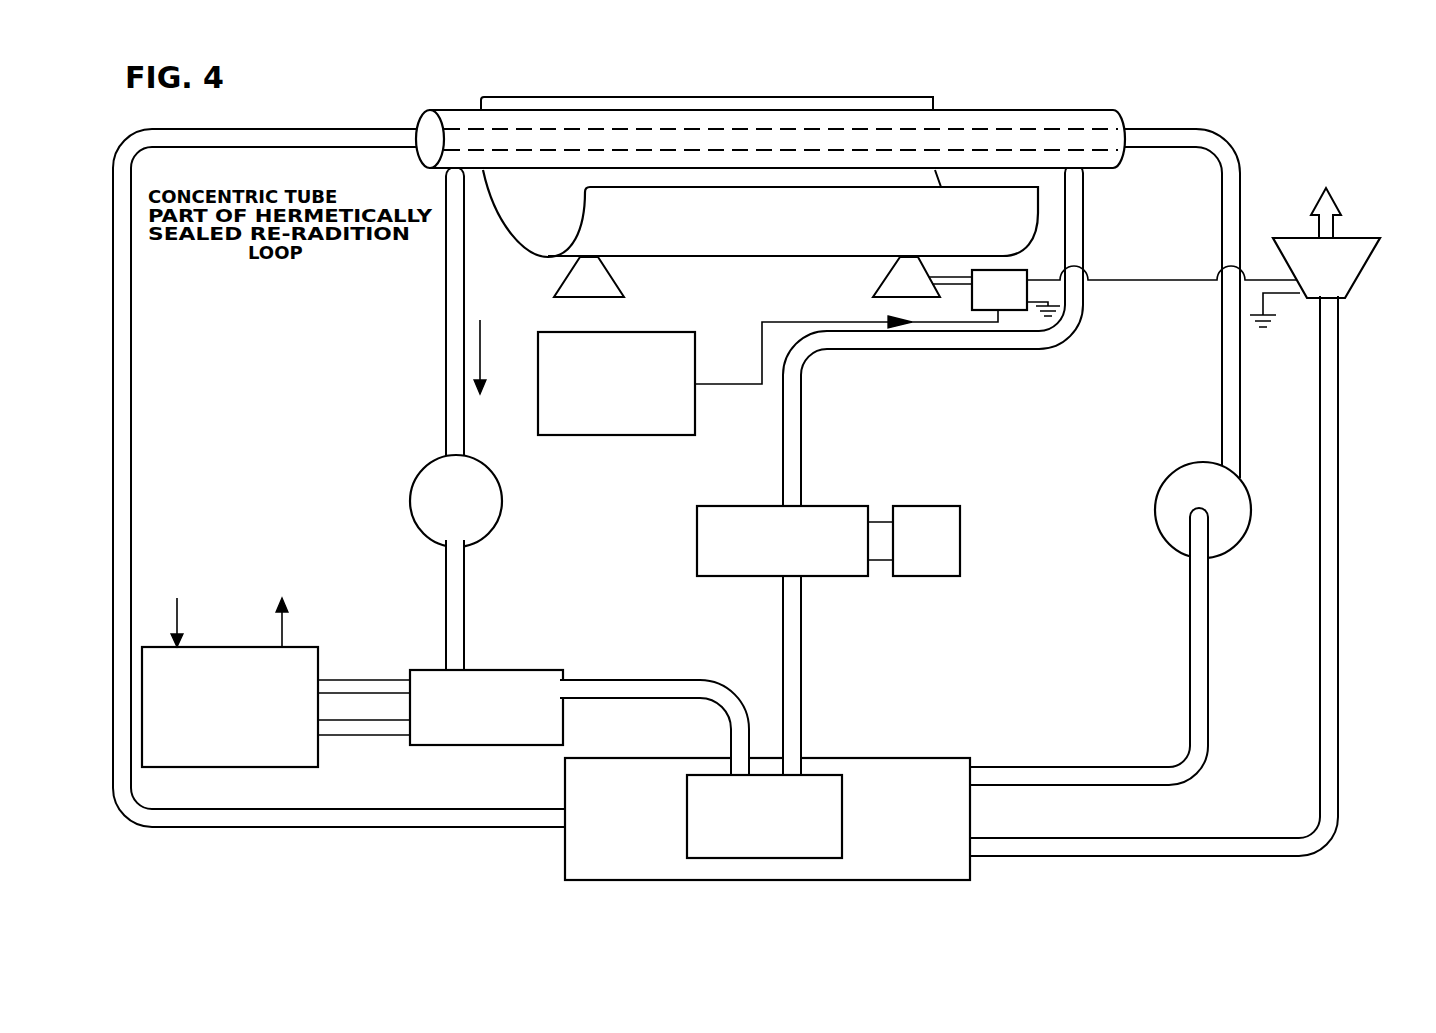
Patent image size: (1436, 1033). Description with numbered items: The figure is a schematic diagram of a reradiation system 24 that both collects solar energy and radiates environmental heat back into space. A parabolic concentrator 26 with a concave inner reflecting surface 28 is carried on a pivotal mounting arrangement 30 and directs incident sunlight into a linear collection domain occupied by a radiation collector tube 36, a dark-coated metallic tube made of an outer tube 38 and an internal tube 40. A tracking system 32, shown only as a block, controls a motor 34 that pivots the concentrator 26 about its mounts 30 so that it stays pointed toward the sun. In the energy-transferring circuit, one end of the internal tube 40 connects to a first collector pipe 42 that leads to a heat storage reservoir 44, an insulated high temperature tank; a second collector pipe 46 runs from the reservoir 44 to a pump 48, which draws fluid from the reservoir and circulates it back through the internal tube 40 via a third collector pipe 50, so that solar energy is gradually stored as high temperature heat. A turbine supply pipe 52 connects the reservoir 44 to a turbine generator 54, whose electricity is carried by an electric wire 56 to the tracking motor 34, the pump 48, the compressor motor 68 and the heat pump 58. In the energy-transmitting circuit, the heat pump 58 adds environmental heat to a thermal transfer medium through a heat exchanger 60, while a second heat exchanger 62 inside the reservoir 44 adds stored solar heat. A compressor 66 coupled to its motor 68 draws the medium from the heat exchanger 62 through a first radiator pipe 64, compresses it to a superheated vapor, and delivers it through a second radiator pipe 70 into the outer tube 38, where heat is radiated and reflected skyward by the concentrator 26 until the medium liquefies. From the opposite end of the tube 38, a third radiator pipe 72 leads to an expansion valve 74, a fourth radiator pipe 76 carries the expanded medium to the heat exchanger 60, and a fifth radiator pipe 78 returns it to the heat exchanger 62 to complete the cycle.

The reradiation system 24 is at (1192, 86).
The parabolic concentrator 26 is at (736, 258).
The concave inner reflecting surface 28 is at (537, 243).
The pivotal mounting arrangement 30 is at (572, 292).
The tracking system 32 is at (616, 438).
The motor 34 is at (1012, 312).
The radiation collector tube 36 is at (739, 100).
The outer tube 38 is at (870, 110).
The internal tube 40 is at (1006, 128).
The first collector pipe 42 is at (116, 418).
The heat storage reservoir 44 is at (912, 759).
The second collector pipe 46 is at (1038, 771).
The pump 48 is at (1171, 538).
The third collector pipe 50 is at (1222, 388).
The turbine supply pipe 52 is at (1338, 745).
The turbine generator 54 is at (1360, 238).
The electric wire 56 is at (1132, 280).
The heat pump 58 is at (308, 653).
The heat exchanger 60 is at (510, 670).
The second heat exchanger 62 is at (822, 775).
The first radiator pipe 64 is at (805, 648).
The compressor 66 is at (830, 506).
The compressor motor 68 is at (962, 518).
The second radiator pipe 70 is at (960, 352).
The third radiator pipe 72 is at (446, 369).
The expansion valve 74 is at (502, 516).
The fourth radiator pipe 76 is at (465, 596).
The fifth radiator pipe 78 is at (692, 680).